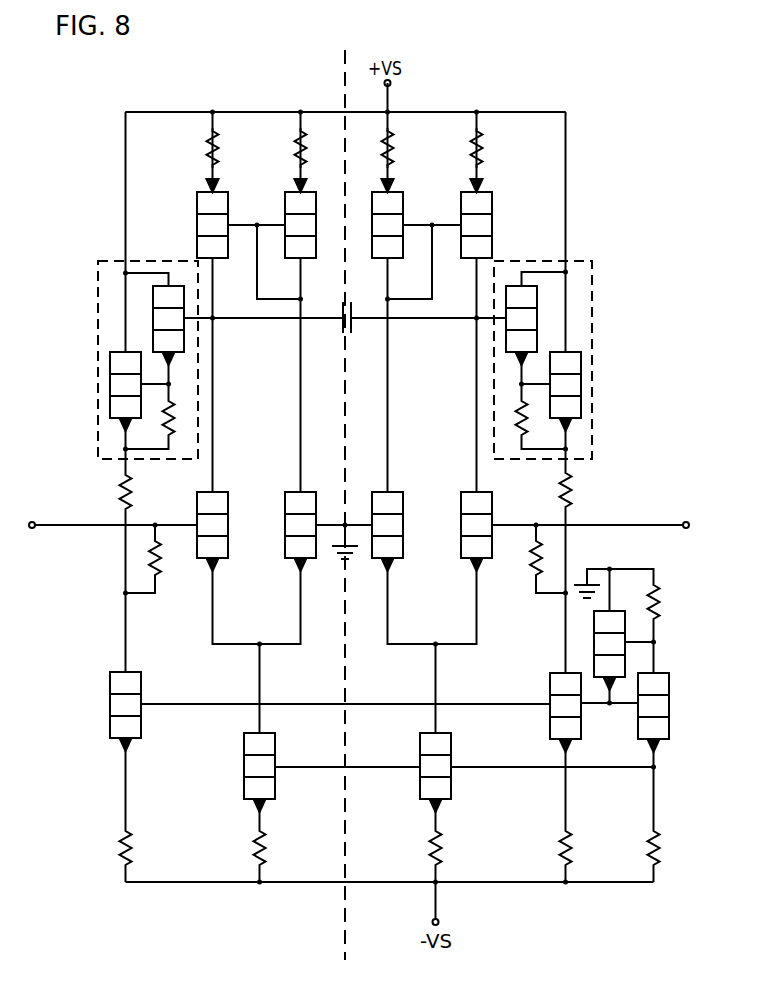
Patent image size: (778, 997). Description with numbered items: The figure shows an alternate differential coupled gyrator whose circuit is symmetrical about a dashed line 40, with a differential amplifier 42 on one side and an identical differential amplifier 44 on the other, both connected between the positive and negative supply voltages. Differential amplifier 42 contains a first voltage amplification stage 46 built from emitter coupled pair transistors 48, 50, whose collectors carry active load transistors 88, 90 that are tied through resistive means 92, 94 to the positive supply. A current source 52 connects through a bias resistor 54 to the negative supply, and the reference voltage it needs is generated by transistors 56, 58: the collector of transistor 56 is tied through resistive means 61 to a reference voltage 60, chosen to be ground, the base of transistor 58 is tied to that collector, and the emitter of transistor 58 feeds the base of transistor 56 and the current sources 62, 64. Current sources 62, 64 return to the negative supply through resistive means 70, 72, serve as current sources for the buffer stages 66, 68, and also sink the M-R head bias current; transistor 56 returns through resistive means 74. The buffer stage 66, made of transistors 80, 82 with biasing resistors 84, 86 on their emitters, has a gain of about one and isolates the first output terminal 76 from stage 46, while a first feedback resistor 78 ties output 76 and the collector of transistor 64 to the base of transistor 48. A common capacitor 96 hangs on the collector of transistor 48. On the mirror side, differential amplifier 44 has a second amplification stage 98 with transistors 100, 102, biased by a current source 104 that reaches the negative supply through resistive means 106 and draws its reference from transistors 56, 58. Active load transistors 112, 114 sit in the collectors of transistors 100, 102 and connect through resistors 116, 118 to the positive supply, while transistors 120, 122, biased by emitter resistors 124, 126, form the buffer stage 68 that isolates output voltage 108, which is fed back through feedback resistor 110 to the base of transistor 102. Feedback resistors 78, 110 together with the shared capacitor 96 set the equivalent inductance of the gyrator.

The dashed line 40 is at (338, 76).
The differential amplifier 42 is at (102, 112).
The differential amplifier 44 is at (588, 120).
The voltage amplification stage 46 is at (273, 613).
The transistor 48 is at (212, 493).
The transistor 50 is at (300, 493).
The current source 52 is at (244, 741).
The bias resistor 54 is at (253, 849).
The transistor 56 is at (669, 681).
The transistor 58 is at (594, 640).
The reference voltage 60 is at (582, 578).
The resistive means 61 is at (660, 604).
The current source 62 is at (550, 683).
The current source 64 is at (142, 679).
The buffer stage 66 is at (105, 262).
The buffer stage 68 is at (574, 261).
The resistive means 70 is at (119, 849).
The resistive means 72 is at (572, 851).
The resistive means 74 is at (660, 851).
The output 76 is at (34, 522).
The feedback resistor 78 is at (160, 565).
The transistor 80 is at (110, 392).
The transistor 82 is at (178, 284).
The biasing resistor 84 is at (170, 414).
The biasing resistor 86 is at (121, 488).
The active load transistor 88 is at (197, 198).
The active load transistor 90 is at (285, 198).
The resistive means 92 is at (207, 150).
The resistive means 94 is at (295, 150).
The common capacitor 96 is at (352, 323).
The voltage amplification stage 98 is at (446, 613).
The transistor 100 is at (400, 494).
The transistor 102 is at (488, 494).
The current source 104 is at (452, 741).
The resistive means 106 is at (443, 851).
The output voltage 108 is at (683, 522).
The feedback resistor 110 is at (530, 558).
The active load circuit transistor 112 is at (403, 198).
The active load circuit transistor 114 is at (492, 198).
The resistor 116 is at (395, 157).
The resistor 118 is at (484, 157).
The transistor 120 is at (513, 284).
The transistor 122 is at (581, 395).
The resistor 124 is at (517, 408).
The resistor 126 is at (570, 490).